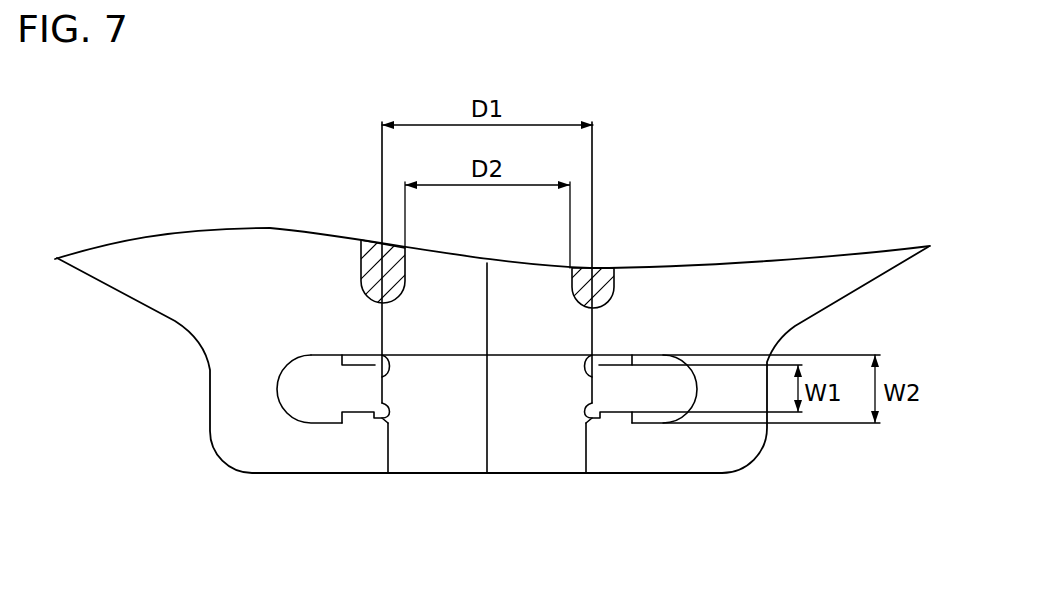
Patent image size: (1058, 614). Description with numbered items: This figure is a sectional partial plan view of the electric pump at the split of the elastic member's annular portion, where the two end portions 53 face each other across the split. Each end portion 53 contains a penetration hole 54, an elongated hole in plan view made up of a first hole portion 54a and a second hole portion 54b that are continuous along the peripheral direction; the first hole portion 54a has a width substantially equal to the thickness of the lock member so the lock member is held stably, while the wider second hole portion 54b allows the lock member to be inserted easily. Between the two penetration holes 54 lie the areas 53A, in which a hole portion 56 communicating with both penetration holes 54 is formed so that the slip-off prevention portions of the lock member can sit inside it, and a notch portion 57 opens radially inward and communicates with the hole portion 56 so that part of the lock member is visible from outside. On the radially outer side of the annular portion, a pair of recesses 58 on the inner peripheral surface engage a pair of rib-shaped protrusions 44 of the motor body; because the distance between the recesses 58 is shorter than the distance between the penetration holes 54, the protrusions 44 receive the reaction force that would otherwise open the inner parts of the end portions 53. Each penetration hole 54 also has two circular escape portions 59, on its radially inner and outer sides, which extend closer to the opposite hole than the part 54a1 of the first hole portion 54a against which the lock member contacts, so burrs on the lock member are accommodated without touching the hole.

The protrusion 44 is at (360, 270).
The end portion 53 is at (278, 448).
The area 53A is at (455, 457).
The penetration hole 54 is at (472, 342).
The first hole portion 54a is at (356, 410).
The part against which the lock member comes into contact 54a1 is at (380, 389).
The second hole portion 54b is at (290, 398).
The hole portion 56 is at (478, 378).
The notch portion 57 is at (389, 452).
The recess 58 is at (375, 242).
The escape portion 59 is at (388, 375).